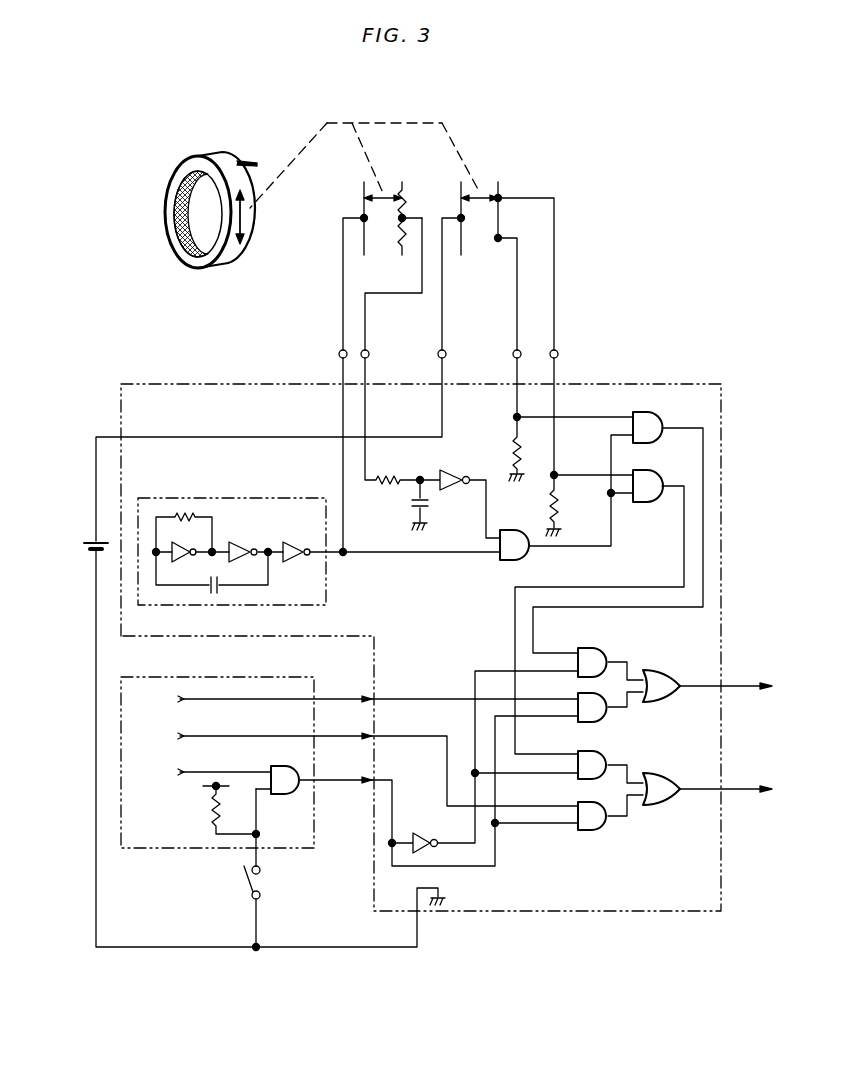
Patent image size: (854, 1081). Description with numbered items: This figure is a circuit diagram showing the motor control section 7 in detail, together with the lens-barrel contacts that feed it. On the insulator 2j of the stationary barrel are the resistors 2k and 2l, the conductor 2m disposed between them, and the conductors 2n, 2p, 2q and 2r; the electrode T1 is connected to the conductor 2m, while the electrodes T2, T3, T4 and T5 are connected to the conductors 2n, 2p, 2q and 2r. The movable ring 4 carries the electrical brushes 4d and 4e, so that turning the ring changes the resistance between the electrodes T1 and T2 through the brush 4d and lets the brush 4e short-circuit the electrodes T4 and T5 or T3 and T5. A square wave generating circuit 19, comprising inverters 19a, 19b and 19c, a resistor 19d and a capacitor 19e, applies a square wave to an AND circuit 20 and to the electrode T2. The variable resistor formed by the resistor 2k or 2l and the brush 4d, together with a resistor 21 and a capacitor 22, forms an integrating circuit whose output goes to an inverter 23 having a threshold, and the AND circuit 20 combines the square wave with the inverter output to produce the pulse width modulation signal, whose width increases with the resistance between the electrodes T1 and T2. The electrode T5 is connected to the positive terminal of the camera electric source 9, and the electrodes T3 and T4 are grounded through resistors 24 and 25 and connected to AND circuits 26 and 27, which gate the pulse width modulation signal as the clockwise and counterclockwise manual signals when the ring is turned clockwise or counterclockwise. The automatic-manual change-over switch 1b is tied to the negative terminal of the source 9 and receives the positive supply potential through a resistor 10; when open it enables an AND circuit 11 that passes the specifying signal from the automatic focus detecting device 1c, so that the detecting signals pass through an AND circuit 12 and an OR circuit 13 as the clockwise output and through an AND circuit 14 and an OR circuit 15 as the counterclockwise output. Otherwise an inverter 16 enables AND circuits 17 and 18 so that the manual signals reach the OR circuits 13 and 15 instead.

The movable ring 4 is at (218, 164).
The conductor 2n is at (362, 190).
The resistor 2k is at (404, 195).
The conductor 2m is at (403, 216).
The resistor 2l is at (402, 246).
The electrical brush 4d is at (386, 194).
The electrical brush 4e is at (483, 194).
The conductor 2r is at (461, 252).
The conductor 2p is at (499, 193).
The insulator 2j is at (500, 220).
The conductor 2q is at (502, 260).
The electrode T1 is at (370, 354).
The electrode T2 is at (340, 354).
The electrode T3 is at (559, 354).
The electrode T4 is at (514, 354).
The electrode T5 is at (439, 354).
The motor control section 7 is at (125, 384).
The camera electric source 9 is at (94, 550).
The square wave generating circuit 19 is at (153, 498).
The inverter 19a is at (182, 550).
The inverter 19b is at (241, 545).
The inverter 19c is at (294, 544).
The resistor 19d is at (184, 514).
The capacitor 19e is at (215, 592).
The resistor 21 is at (388, 477).
The capacitor 22 is at (410, 504).
The inverter 23 is at (456, 490).
The AND circuit 20 is at (510, 564).
The resistor 24 is at (512, 454).
The resistor 25 is at (560, 510).
The AND circuit 26 is at (656, 418).
The AND circuit 27 is at (658, 472).
The automatic focus detecting device 1c is at (158, 676).
The automatic-manual change-over switch 1b is at (247, 882).
The resistor 10 is at (208, 820).
The AND circuit 11 is at (286, 798).
The inverter 16 is at (420, 834).
The AND circuit 17 is at (594, 652).
The AND circuit 12 is at (598, 719).
The OR circuit 13 is at (656, 676).
The AND circuit 18 is at (594, 754).
The AND circuit 14 is at (598, 828).
The OR circuit 15 is at (660, 776).